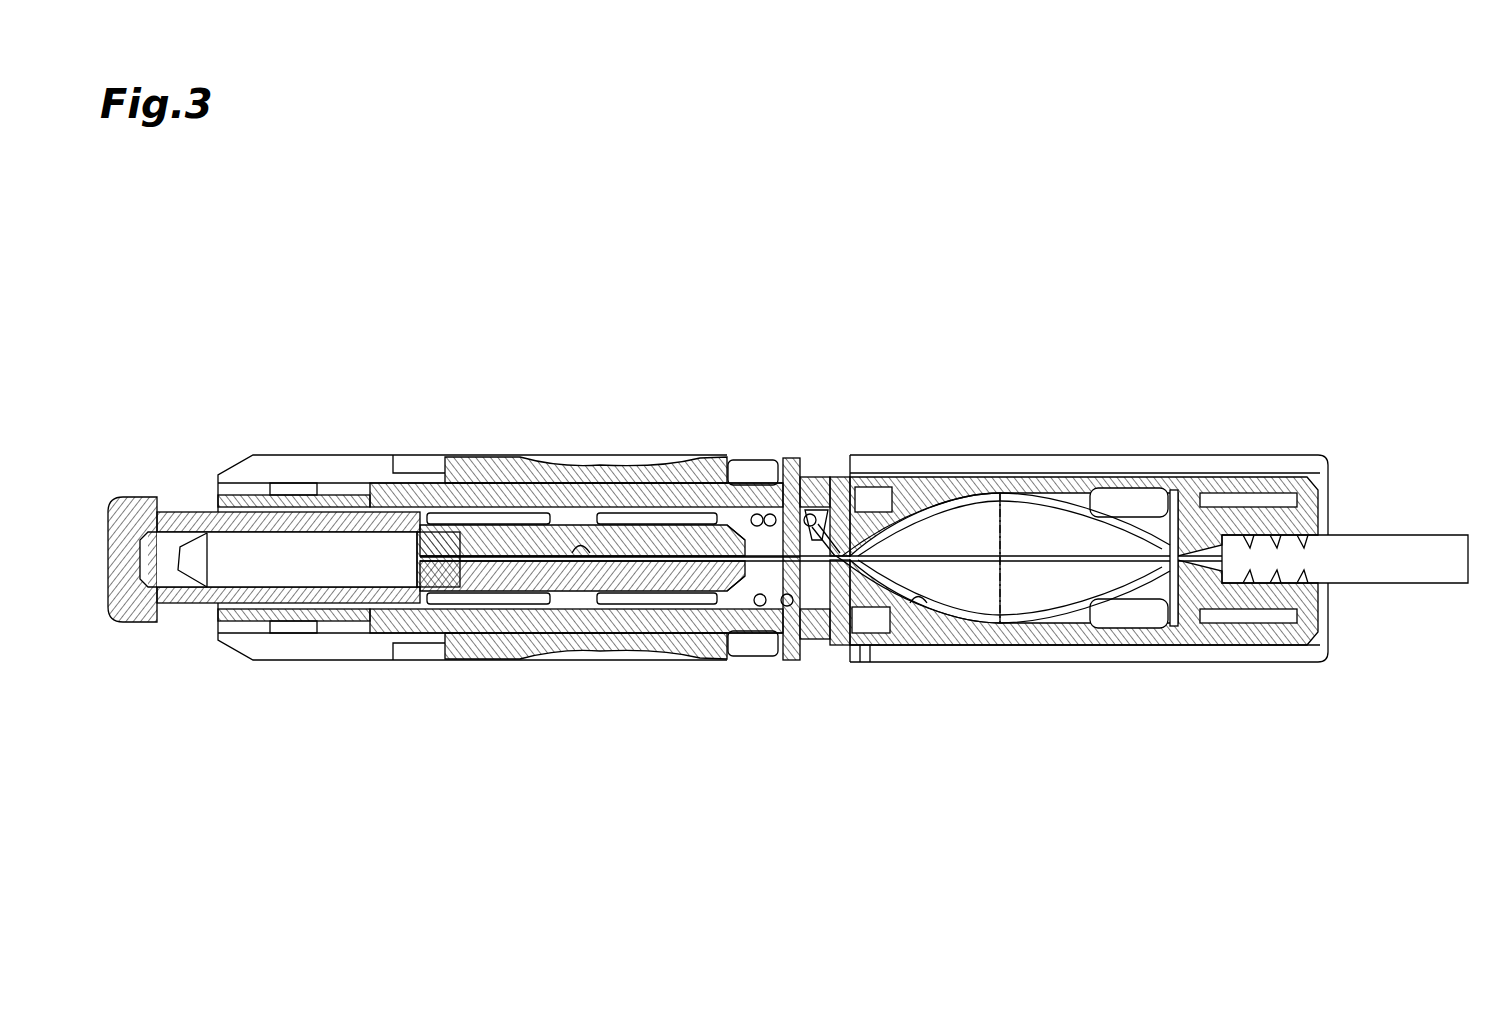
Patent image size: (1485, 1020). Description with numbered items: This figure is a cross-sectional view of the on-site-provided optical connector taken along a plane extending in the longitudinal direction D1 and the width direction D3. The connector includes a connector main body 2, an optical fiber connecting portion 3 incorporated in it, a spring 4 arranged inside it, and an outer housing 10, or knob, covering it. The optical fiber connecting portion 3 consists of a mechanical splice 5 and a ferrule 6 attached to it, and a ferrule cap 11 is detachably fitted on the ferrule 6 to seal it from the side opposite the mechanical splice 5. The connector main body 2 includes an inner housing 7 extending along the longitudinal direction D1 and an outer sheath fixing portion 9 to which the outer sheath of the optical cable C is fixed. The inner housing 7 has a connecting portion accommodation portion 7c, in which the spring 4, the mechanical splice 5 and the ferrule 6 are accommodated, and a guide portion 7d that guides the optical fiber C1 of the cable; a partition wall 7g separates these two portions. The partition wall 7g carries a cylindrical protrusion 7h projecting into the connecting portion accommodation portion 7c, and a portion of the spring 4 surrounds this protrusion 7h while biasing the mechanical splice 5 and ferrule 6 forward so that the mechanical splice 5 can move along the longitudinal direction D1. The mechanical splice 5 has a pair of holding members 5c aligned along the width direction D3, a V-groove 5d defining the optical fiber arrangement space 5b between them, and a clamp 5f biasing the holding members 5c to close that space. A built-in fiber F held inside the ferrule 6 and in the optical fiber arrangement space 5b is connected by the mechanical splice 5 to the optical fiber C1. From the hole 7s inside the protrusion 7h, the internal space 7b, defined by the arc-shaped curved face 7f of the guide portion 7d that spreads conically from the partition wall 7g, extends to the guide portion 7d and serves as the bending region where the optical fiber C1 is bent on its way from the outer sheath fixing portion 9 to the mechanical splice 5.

The connector main body 2 is at (978, 436).
The optical fiber connecting portion 3 is at (823, 502).
The spring 4 is at (797, 660).
The mechanical splice 5 is at (568, 515).
The optical fiber arrangement space 5b is at (578, 555).
The holding members 5c is at (512, 513).
The V-groove 5d is at (738, 650).
The clamp 5f is at (470, 610).
The ferrule 6 is at (292, 568).
The inner housing 7 is at (920, 462).
The internal space 7b is at (903, 540).
The connecting portion accommodation portion 7c is at (806, 575).
The guide portion 7d is at (872, 633).
The curved face 7f is at (920, 603).
The partition wall 7g is at (828, 562).
The protrusion 7h is at (783, 458).
The hole 7s is at (838, 520).
The outer sheath fixing portion 9 is at (1253, 512).
The outer housing 10 is at (472, 460).
The ferrule cap 11 is at (133, 612).
The built-in fiber F is at (424, 562).
The optical cable C is at (1408, 567).
The optical fiber C1 is at (1012, 493).
The longitudinal direction D1 is at (1272, 681).
The width direction D3 is at (1357, 427).